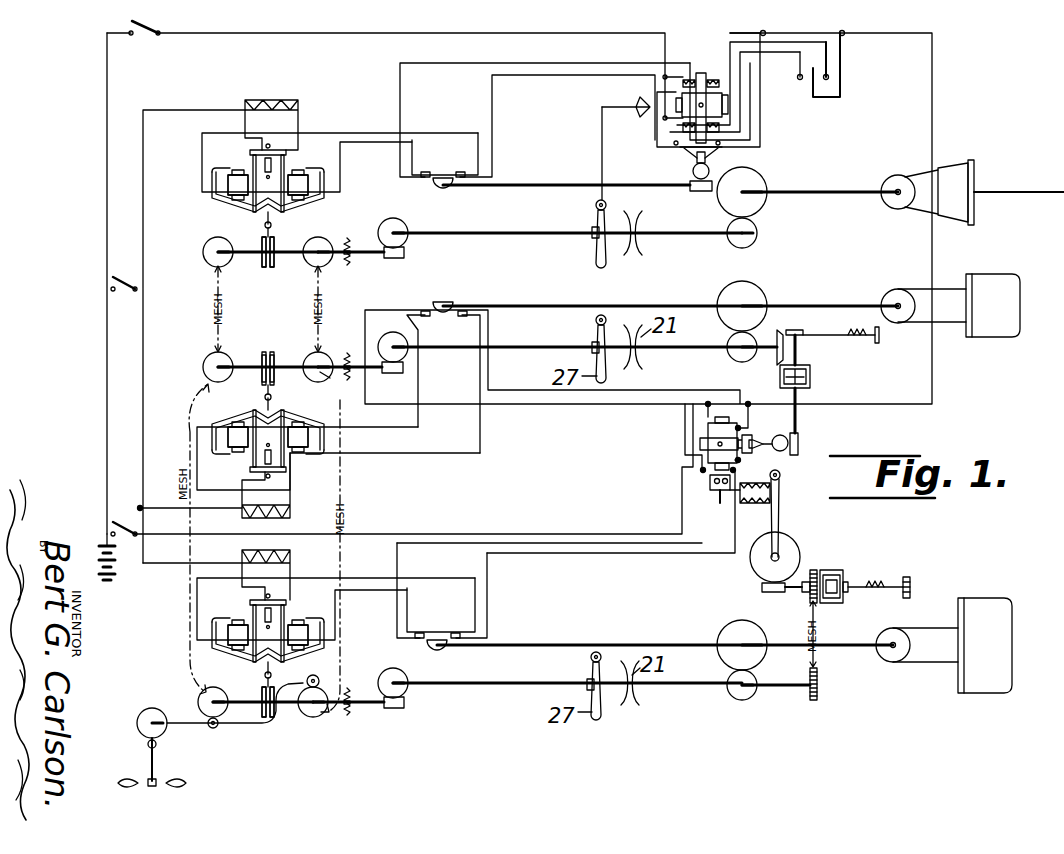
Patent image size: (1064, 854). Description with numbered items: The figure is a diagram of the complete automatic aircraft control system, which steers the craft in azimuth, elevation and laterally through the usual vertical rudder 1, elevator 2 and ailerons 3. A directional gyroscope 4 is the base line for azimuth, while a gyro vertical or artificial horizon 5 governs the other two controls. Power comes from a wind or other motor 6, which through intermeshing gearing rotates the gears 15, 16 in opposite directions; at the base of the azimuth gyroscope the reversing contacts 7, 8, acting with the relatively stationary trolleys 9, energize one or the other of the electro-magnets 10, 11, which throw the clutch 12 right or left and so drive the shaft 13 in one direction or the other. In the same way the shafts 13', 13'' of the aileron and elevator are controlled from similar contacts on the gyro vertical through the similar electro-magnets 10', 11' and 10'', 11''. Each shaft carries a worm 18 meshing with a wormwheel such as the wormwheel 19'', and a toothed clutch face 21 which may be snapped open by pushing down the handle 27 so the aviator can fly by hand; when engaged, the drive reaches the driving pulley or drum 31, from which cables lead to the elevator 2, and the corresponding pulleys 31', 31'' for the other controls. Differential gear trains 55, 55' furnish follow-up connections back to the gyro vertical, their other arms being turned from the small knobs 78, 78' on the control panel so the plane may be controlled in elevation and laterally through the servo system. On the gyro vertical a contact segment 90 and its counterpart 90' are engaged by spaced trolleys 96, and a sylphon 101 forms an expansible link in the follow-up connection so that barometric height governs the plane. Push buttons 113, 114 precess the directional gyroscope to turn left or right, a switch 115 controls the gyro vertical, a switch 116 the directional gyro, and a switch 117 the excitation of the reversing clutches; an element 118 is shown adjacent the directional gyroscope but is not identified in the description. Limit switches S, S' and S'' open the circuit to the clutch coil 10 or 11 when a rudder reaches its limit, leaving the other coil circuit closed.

The vertical rudder 1 is at (1030, 191).
The elevator 2 is at (1013, 606).
The ailerons 3 is at (1018, 333).
The directional gyroscope 4 is at (722, 106).
The gyro vertical 5 is at (712, 432).
The wind motor 6 is at (152, 747).
The reversing contact 7 is at (684, 150).
The reversing contact 8 is at (708, 150).
The trolleys 9 is at (692, 175).
The electro-magnet 10 is at (227, 169).
The electro-magnet 11 is at (313, 169).
The clutch 12 is at (273, 248).
The shaft 13 is at (364, 265).
The gear 15 is at (204, 250).
The gear 16 is at (324, 242).
The worm 18 is at (404, 253).
The wormwheel 19'' is at (412, 222).
The toothed clutch face 21 is at (641, 222).
The handle 27 is at (597, 263).
The driving pulley 31 is at (886, 664).
The driving pulley 31' is at (884, 293).
The driving pulley 31'' is at (890, 178).
The differential gear train 55 is at (811, 392).
The differential gear train 55' is at (815, 573).
The knob 78 is at (858, 346).
The knob 78' is at (900, 578).
The contact segment 90 is at (735, 465).
The contact segment 90' is at (688, 491).
The trolleys 96 is at (763, 430).
The sylphon 101 is at (760, 494).
The push button 113 is at (786, 71).
The push button 114 is at (826, 77).
The switch 115 is at (123, 533).
The switch 116 is at (137, 42).
The switch 117 is at (130, 300).
The arrow indicator 118 is at (640, 104).
The limit switch S is at (445, 160).
The limit switch S' is at (443, 377).
The limit switch S'' is at (442, 596).
The electro-magnet 10' is at (224, 417).
The electro-magnet 11' is at (313, 417).
The electro-magnet 10'' is at (223, 616).
The electro-magnet 11'' is at (314, 616).
The shaft 13' is at (387, 382).
The shaft 13'' is at (381, 719).